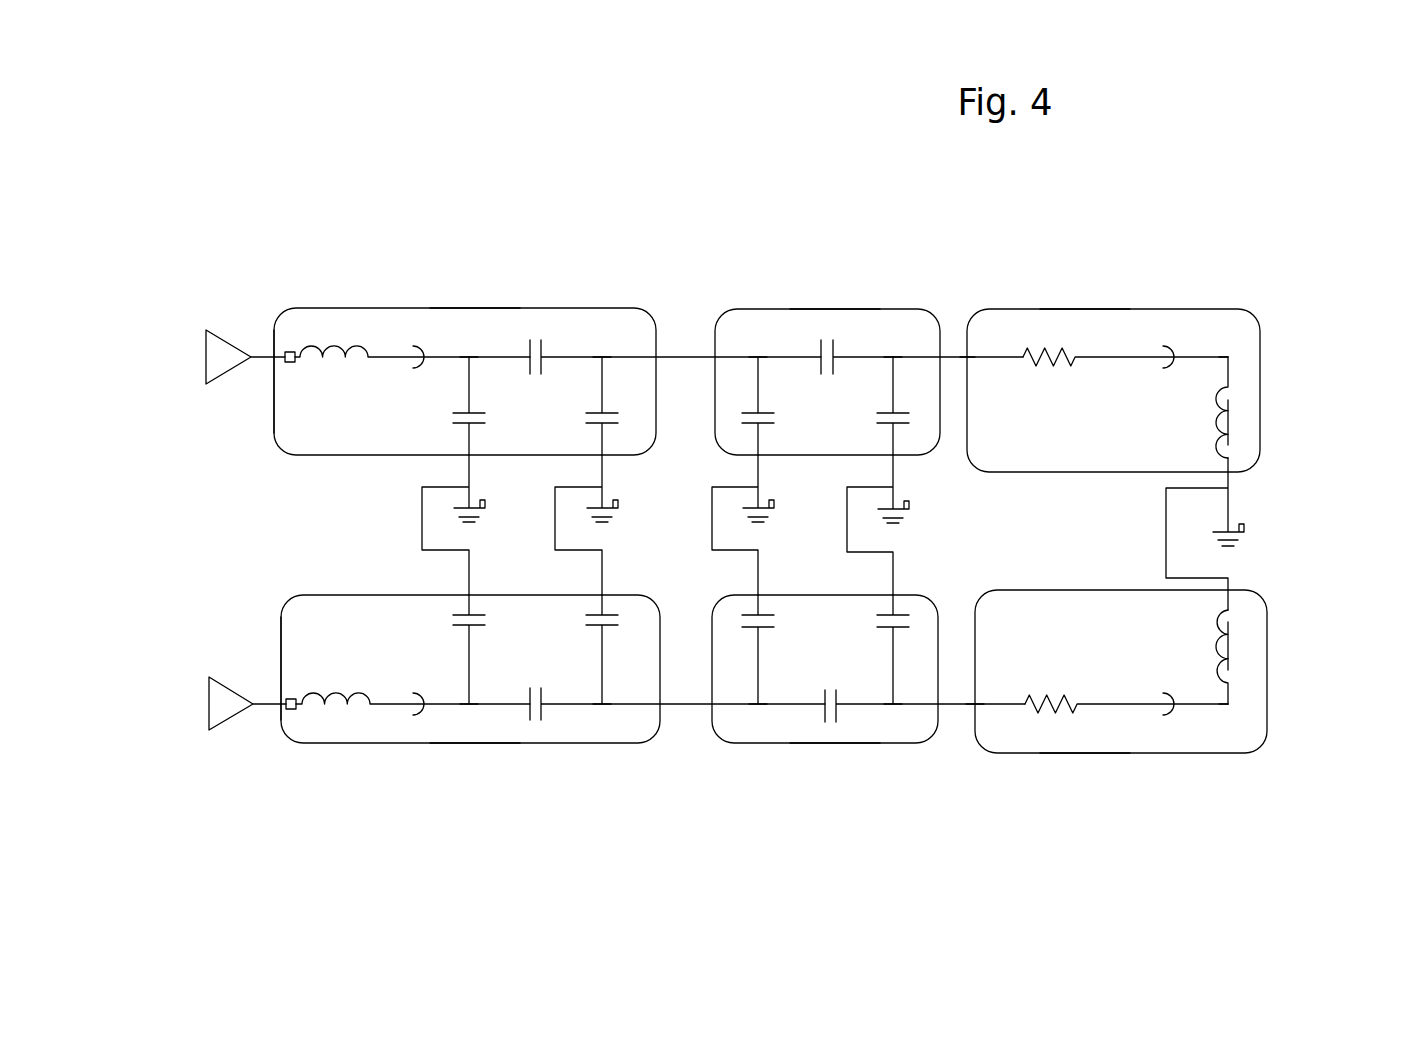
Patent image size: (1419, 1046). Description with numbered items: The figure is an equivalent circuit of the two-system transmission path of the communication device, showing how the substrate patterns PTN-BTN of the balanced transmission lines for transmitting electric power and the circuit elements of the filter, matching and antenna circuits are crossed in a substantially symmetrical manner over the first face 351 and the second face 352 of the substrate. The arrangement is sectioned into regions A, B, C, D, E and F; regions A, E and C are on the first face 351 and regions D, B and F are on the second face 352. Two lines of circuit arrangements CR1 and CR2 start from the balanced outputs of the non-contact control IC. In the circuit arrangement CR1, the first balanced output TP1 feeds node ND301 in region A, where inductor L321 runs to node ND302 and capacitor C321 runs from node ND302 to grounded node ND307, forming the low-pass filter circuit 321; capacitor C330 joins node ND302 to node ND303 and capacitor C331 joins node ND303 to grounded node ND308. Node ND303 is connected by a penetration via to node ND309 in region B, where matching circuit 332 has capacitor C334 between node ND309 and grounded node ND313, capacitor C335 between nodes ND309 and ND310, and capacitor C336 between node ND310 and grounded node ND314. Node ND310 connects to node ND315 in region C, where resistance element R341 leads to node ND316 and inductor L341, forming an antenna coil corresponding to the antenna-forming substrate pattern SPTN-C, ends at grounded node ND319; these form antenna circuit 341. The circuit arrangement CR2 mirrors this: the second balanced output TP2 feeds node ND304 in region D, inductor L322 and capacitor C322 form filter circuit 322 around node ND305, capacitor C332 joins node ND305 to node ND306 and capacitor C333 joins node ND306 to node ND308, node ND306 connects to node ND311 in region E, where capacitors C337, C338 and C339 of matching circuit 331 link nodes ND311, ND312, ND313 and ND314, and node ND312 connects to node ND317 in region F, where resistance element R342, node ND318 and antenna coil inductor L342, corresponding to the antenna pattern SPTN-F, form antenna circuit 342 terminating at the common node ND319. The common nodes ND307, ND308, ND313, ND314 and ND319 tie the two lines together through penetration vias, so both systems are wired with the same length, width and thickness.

The region A is at (469, 225).
The region B is at (829, 225).
The region C is at (1116, 225).
The region D is at (469, 830).
The region E is at (829, 830).
The region F is at (1117, 830).
The filter circuit of the first system 321 is at (335, 441).
The filter circuit of the second system 322 is at (342, 629).
The matching circuit of the first system 331 is at (810, 659).
The matching circuit of the second system 332 is at (848, 403).
The antenna circuit of the first system 341 is at (1110, 443).
The antenna circuit of the second system 342 is at (1067, 651).
The circuit arrangement of the first line CR1 is at (258, 422).
The circuit arrangement of the second line CR2 is at (258, 631).
The first balanced output TP1 is at (206, 357).
The second balanced output TP2 is at (206, 703).
The node ND301 is at (290, 351).
The node ND302 is at (469, 357).
The node ND303 is at (602, 357).
The node ND304 is at (290, 709).
The node ND305 is at (469, 705).
The node ND306 is at (602, 705).
The node ND307 is at (471, 490).
The node ND308 is at (603, 490).
The node ND309 is at (758, 357).
The node ND310 is at (893, 357).
The node ND311 is at (760, 705).
The node ND312 is at (893, 705).
The node ND313 is at (759, 490).
The node ND314 is at (895, 487).
The node ND315 is at (967, 357).
The node ND316 is at (1228, 357).
The node ND317 is at (975, 705).
The node ND318 is at (1228, 705).
The node ND319 is at (1230, 488).
The inductor L321 is at (412, 368).
The inductor L322 is at (413, 685).
The inductor L341 is at (1192, 407).
The inductor L342 is at (1192, 657).
The capacitor C321 is at (453, 418).
The capacitor C322 is at (453, 620).
The capacitor C330 is at (667, 370).
The capacitor C331 is at (586, 418).
The capacitor C332 is at (669, 693).
The capacitor C333 is at (586, 620).
The capacitor C334 is at (742, 418).
The capacitor C335 is at (911, 345).
The capacitor C336 is at (877, 418).
The capacitor C337 is at (740, 613).
The capacitor C338 is at (914, 694).
The capacitor C339 is at (877, 620).
The resistance element R341 is at (1125, 374).
The resistance element R342 is at (1126, 692).
The substrate pattern of balanced transmission line PTN-BTN is at (413, 346).
The substrate pattern forming the antenna SPTN-C is at (1242, 422).
The substrate pattern forming the antenna SPTN-F is at (1242, 649).
The first face 351 is at (470, 308).
The second face 352 is at (833, 309).